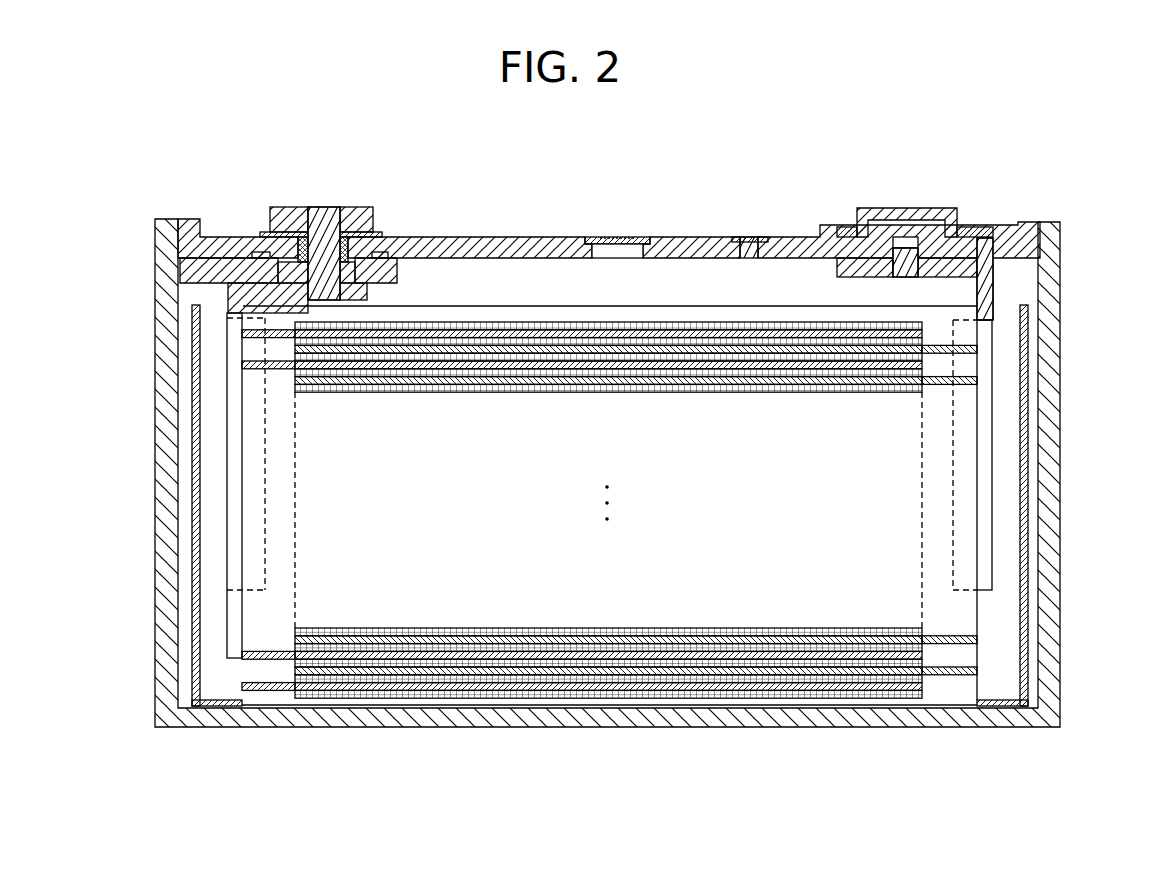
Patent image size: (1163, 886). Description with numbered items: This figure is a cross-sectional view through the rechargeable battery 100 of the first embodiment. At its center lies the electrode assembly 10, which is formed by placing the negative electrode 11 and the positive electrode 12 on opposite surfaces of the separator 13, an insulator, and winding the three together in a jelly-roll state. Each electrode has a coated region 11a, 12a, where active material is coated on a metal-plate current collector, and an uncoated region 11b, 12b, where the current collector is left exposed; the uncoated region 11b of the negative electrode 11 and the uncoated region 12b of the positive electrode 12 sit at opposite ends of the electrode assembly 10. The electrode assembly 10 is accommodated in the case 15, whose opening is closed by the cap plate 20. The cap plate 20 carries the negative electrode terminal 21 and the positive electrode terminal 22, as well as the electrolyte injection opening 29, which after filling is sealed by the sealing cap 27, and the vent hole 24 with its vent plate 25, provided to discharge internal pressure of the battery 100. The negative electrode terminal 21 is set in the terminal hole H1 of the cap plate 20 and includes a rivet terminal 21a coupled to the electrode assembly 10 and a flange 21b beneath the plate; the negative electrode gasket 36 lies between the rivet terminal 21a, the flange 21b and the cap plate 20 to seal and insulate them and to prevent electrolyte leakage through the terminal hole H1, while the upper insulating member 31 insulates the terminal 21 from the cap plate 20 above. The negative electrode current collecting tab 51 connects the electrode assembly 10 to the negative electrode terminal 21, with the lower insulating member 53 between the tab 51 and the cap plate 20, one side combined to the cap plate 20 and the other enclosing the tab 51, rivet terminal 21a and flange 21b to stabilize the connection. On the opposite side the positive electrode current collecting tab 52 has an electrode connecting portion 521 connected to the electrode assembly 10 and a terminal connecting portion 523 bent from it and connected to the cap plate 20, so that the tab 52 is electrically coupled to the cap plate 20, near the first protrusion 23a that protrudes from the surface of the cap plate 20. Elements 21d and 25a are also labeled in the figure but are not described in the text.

The rechargeable battery 100 is at (498, 134).
The electrode assembly 10 is at (532, 498).
The negative electrode 11 is at (502, 574).
The coated region 11a is at (383, 690).
The uncoated region 11b is at (247, 331).
The positive electrode 12 is at (639, 583).
The coated region 12a is at (845, 680).
The uncoated region 12b is at (952, 710).
The separator 13 is at (468, 320).
The case 15 is at (1052, 468).
The cap plate 20 is at (687, 250).
The negative electrode terminal 21 is at (327, 203).
The rivet terminal 21a is at (322, 285).
The flange 21b is at (360, 280).
The terminal plate 21d is at (300, 234).
The positive electrode terminal 22 is at (907, 203).
The first protrusion 23a is at (903, 267).
The vent hole 24 is at (612, 252).
The vent plate 25 is at (640, 238).
The notch 25a is at (613, 237).
The sealing cap 27 is at (752, 242).
The electrolyte injection opening 29 is at (746, 238).
The upper insulating member 31 is at (393, 222).
The negative electrode gasket 36 is at (287, 222).
The negative electrode current collecting tab 51 is at (218, 440).
The positive electrode current collecting tab 52 is at (997, 553).
The electrode connecting portion 521 is at (983, 418).
The terminal connecting portion 523 is at (930, 282).
The lower insulating member 53 is at (195, 277).
The terminal hole H1 is at (313, 228).